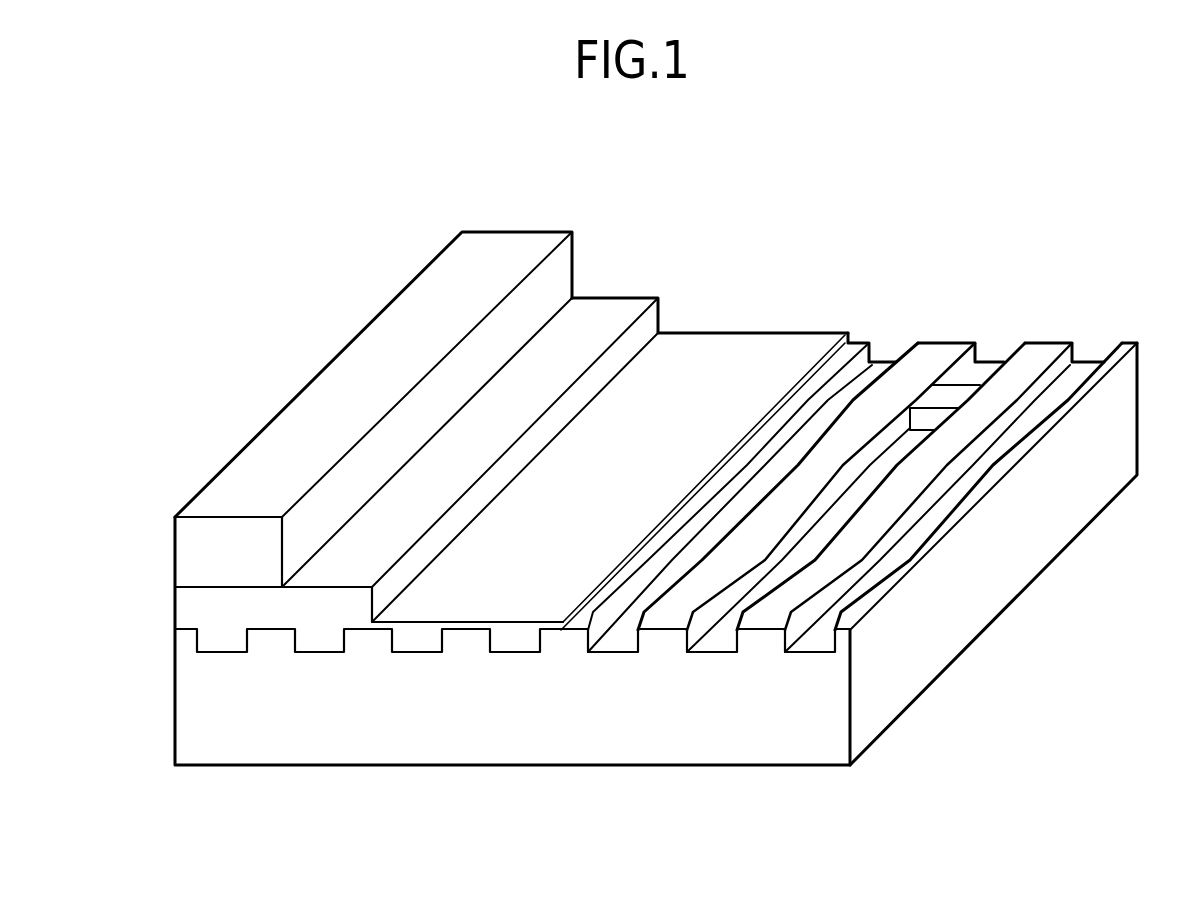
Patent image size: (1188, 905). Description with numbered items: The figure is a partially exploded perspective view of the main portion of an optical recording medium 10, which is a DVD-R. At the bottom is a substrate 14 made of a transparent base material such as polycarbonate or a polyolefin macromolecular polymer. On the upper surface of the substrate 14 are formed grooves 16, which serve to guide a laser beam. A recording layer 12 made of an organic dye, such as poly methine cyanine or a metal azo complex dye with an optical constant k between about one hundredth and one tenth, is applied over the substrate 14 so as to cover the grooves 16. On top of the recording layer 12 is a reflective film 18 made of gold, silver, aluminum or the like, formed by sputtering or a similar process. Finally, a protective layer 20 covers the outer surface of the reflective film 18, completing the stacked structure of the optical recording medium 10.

The optical recording medium 10 is at (234, 233).
The recording layer 12 is at (417, 640).
The substrate 14 is at (966, 607).
The grooves 16 is at (885, 355).
The reflective film 18 is at (650, 325).
The protective layer 20 is at (560, 275).